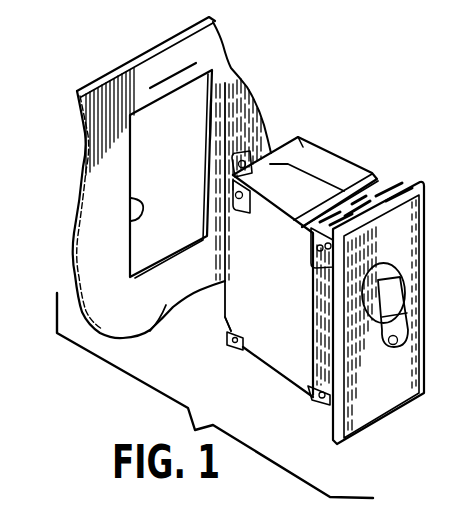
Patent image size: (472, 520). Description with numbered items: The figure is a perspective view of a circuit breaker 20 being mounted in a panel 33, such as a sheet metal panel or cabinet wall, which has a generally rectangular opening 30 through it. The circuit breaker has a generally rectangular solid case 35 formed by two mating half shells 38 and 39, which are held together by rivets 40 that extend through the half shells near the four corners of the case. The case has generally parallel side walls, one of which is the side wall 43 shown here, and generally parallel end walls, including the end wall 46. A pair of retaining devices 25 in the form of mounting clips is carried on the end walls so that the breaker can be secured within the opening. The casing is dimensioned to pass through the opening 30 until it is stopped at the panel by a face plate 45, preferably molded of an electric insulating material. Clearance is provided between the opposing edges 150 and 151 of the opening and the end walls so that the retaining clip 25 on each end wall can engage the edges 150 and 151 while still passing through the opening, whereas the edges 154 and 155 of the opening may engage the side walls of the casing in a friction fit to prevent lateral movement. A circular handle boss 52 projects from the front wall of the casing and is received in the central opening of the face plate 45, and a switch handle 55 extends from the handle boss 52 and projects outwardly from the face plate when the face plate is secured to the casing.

The circuit breaker 20 is at (351, 146).
The retaining devices 25 is at (387, 172).
The opening 30 is at (184, 190).
The panel 33 is at (212, 45).
The case 35 is at (232, 312).
The half shell 38 is at (275, 180).
The half shell 39 is at (303, 147).
The rivets 40 is at (232, 350).
The side wall 43 is at (268, 353).
The face plate 45 is at (423, 247).
The end wall 46 is at (322, 150).
The handle boss 52 is at (400, 287).
The switch handle 55 is at (410, 330).
The edge 150 is at (173, 91).
The edge 151 is at (160, 252).
The edge 154 is at (208, 135).
The edge 155 is at (134, 220).